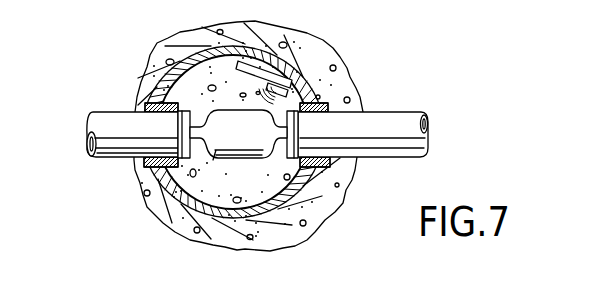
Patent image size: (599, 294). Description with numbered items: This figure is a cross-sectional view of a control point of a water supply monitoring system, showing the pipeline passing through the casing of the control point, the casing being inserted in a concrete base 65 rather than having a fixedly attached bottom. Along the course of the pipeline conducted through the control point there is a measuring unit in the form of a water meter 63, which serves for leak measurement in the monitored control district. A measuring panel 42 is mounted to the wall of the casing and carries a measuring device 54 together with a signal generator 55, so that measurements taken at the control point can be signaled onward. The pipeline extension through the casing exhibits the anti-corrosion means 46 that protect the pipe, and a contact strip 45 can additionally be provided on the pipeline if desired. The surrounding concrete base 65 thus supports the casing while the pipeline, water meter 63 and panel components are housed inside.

The measuring panel 42 is at (298, 62).
The contact strip 45 is at (158, 133).
The anti-corrosion means 46 is at (137, 181).
The measuring device 54 is at (224, 57).
The signal generator 55 is at (342, 82).
The water meter 63 is at (193, 208).
The concrete base 65 is at (330, 206).